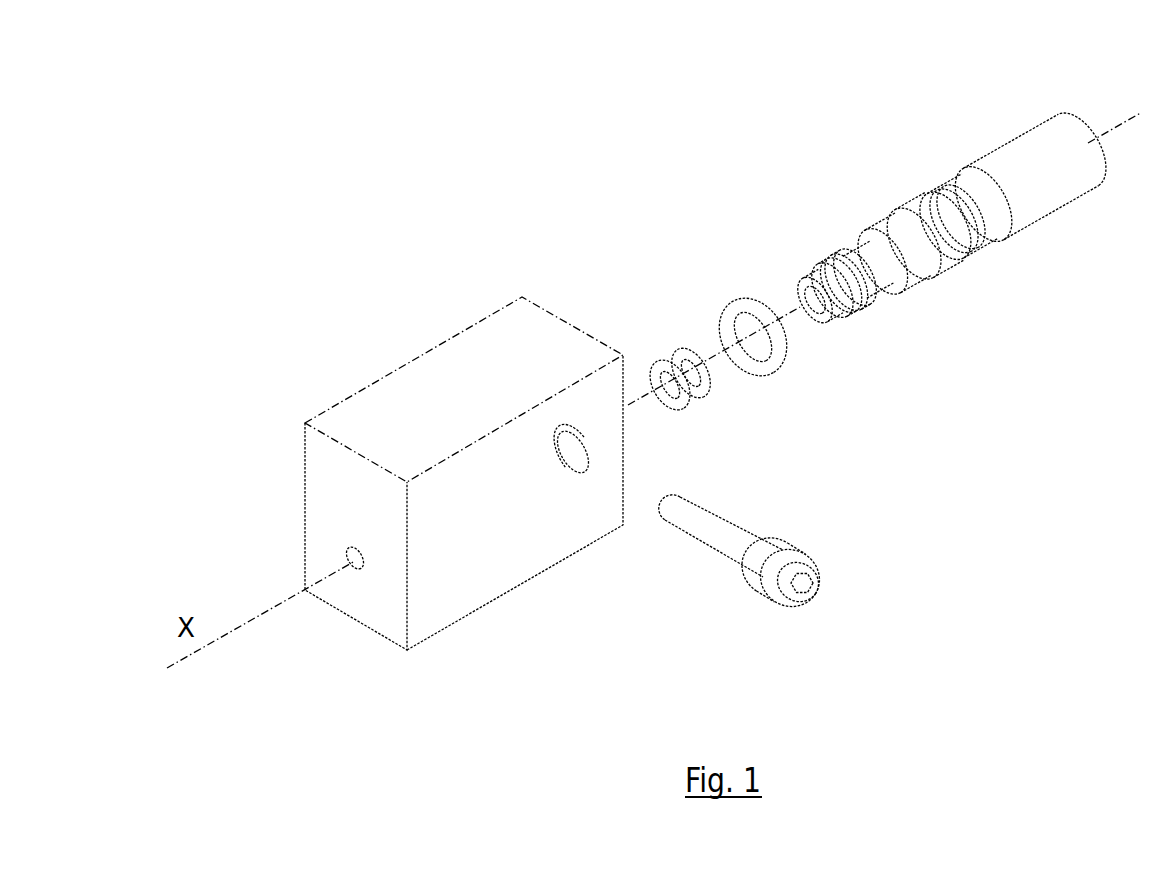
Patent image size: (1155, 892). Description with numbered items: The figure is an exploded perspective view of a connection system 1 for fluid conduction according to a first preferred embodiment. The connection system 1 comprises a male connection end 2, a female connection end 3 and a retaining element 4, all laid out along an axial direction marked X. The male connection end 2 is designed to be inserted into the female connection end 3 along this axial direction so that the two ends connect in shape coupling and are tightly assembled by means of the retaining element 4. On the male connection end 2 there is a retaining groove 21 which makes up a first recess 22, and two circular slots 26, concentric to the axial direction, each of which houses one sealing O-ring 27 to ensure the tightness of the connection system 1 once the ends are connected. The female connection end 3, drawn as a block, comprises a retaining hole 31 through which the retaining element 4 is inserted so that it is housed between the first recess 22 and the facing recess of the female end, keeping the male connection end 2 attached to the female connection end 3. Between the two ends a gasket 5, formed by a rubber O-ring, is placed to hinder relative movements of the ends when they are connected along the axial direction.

The connection system 1 is at (449, 134).
The male connection end 2 is at (940, 168).
The female connection end 3 is at (394, 356).
The retaining element 4 is at (743, 532).
The gasket 5 is at (737, 297).
The retaining groove 21 is at (913, 262).
The first recess 22 is at (920, 240).
The circular slots 26 is at (860, 282).
The sealing O-ring 27 is at (678, 348).
The retaining hole 31 is at (568, 450).